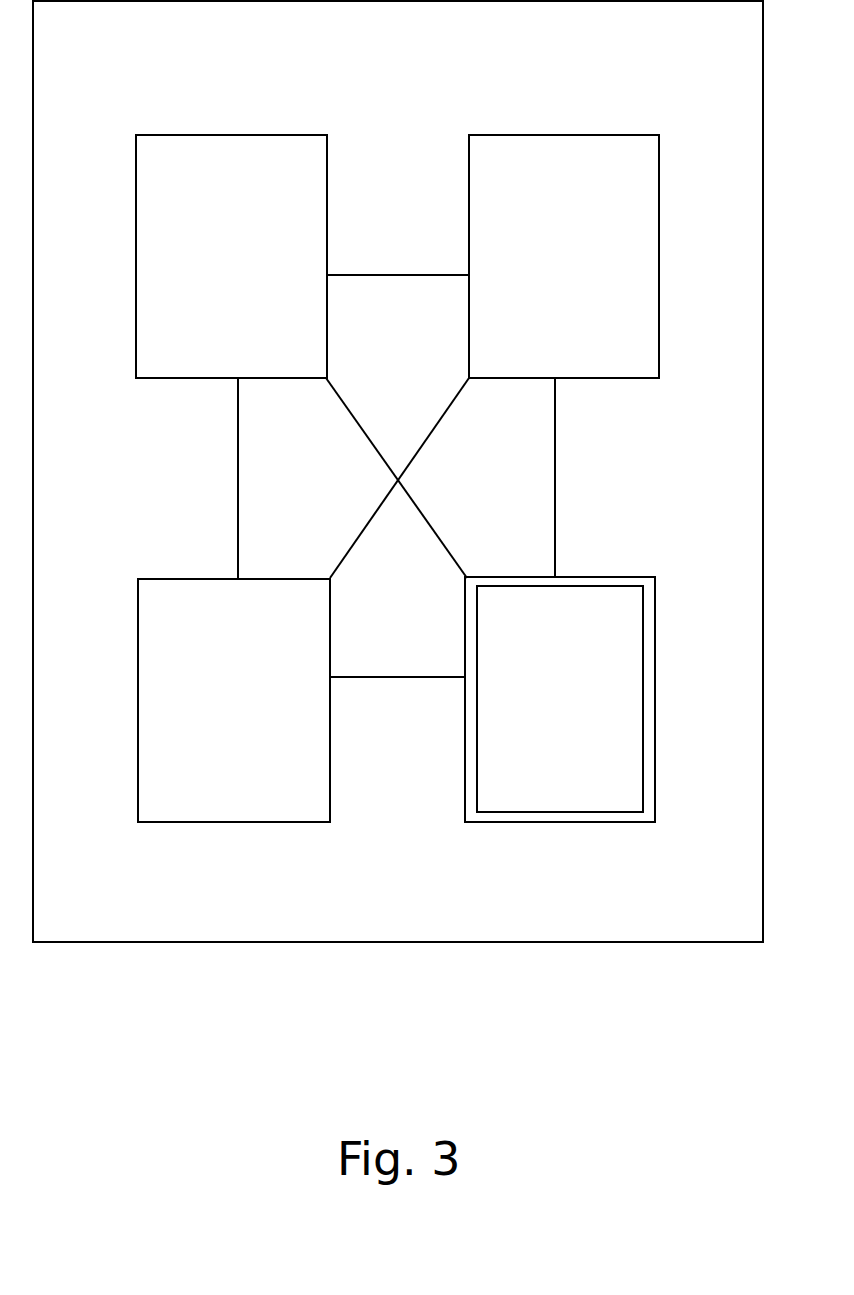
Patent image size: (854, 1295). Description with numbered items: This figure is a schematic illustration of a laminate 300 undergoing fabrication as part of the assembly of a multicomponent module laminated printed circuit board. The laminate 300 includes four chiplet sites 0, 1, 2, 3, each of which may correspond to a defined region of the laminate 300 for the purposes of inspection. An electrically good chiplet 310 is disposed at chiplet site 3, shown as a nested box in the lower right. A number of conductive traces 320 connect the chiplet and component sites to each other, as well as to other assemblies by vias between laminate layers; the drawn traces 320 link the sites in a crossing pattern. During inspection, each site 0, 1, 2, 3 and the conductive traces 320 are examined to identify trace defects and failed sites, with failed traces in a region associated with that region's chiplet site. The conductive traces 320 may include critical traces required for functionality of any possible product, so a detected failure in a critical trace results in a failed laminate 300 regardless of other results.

The laminate 300 is at (112, 50).
The chiplet site 0 is at (175, 173).
The chiplet site 1 is at (500, 173).
The chiplet site 2 is at (173, 618).
The chiplet site 3 is at (572, 577).
The electrically good chiplet 310 is at (547, 640).
The conductive traces 320 is at (362, 533).